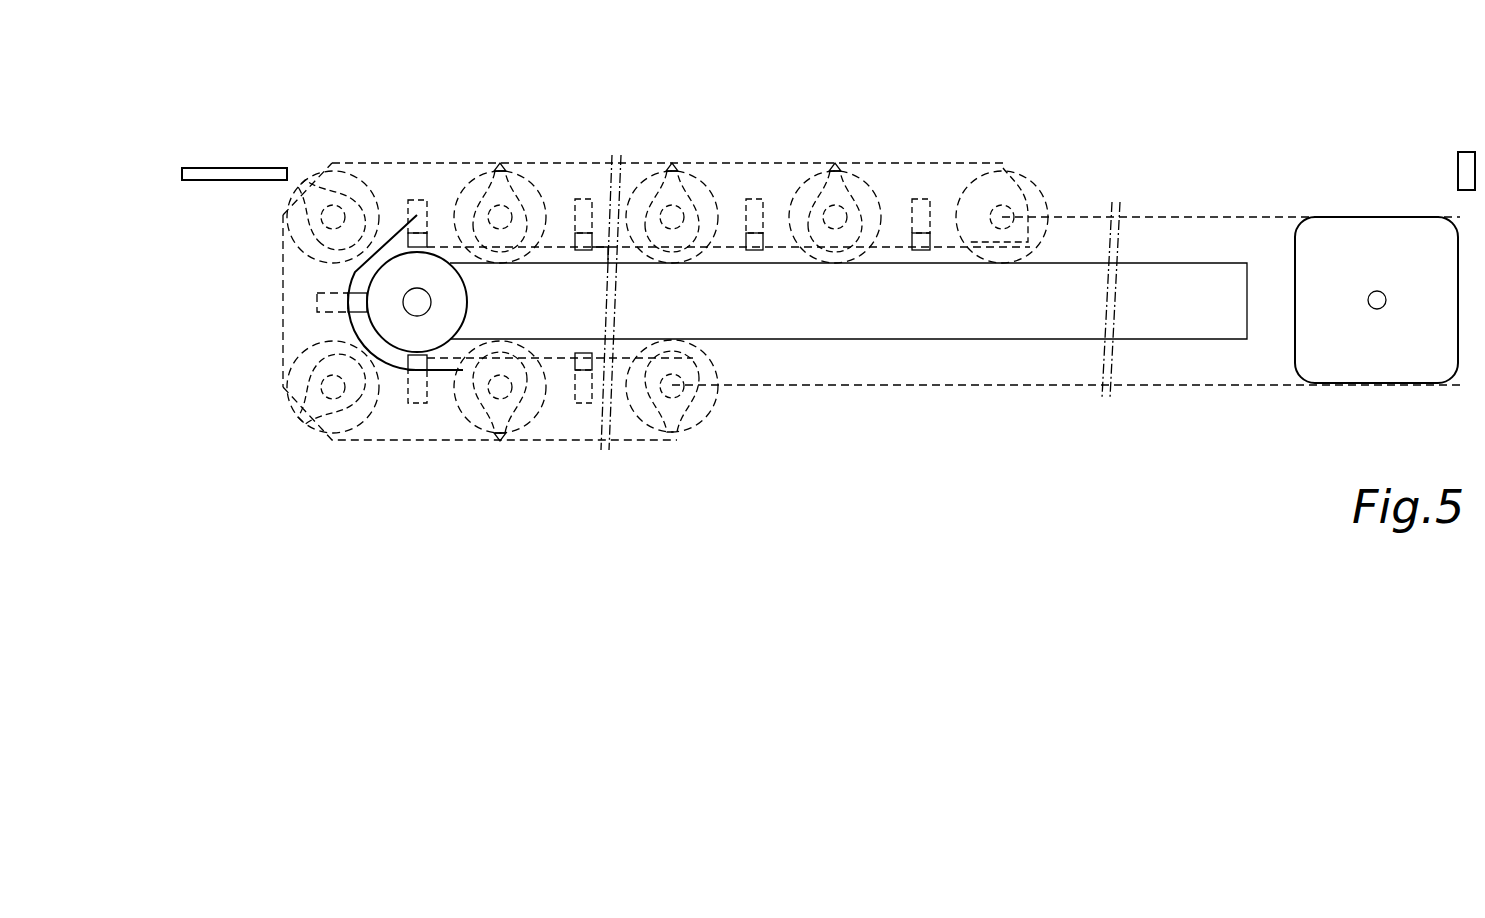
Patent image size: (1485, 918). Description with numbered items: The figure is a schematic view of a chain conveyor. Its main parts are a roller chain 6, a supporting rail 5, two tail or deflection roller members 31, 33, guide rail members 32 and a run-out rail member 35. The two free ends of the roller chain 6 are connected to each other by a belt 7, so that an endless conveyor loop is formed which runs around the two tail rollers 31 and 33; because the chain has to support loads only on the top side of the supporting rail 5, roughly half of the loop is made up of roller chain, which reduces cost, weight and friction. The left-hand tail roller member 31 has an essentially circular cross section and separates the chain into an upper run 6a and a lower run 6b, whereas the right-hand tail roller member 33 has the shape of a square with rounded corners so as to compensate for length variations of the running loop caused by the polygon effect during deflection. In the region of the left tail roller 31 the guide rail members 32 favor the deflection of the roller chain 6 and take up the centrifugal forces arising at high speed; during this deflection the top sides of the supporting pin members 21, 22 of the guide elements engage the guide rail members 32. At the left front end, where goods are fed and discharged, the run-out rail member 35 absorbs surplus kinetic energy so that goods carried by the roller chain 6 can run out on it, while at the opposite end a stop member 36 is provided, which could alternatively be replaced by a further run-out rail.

The supporting rail 5 is at (910, 265).
The roller chain 6 is at (222, 290).
The upper run 6a is at (551, 126).
The lower run 6b is at (527, 472).
The belt 7 is at (1203, 215).
The supporting pin member 21 is at (583, 252).
The supporting pin member 22 is at (755, 251).
The tail roller member 31 is at (447, 308).
The guide rail member 32 is at (397, 372).
The tail roller member 33 is at (1348, 238).
The run-out rail member 35 is at (235, 173).
The stop member 36 is at (1465, 157).